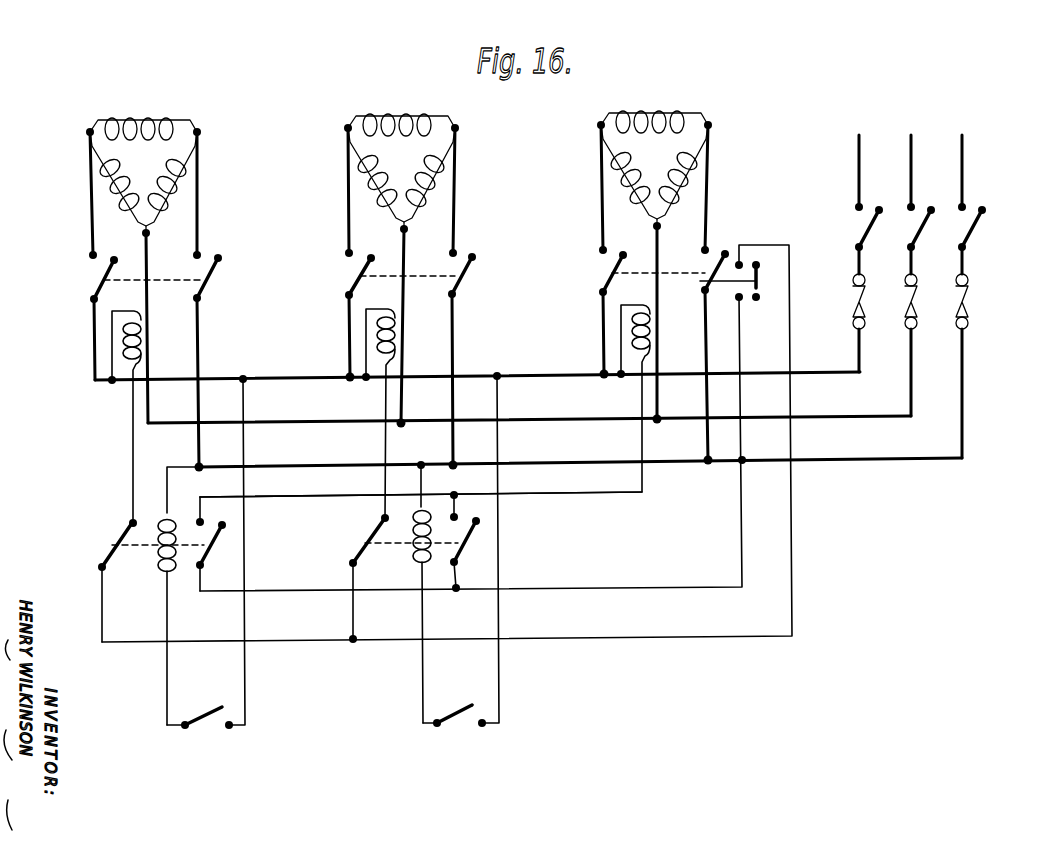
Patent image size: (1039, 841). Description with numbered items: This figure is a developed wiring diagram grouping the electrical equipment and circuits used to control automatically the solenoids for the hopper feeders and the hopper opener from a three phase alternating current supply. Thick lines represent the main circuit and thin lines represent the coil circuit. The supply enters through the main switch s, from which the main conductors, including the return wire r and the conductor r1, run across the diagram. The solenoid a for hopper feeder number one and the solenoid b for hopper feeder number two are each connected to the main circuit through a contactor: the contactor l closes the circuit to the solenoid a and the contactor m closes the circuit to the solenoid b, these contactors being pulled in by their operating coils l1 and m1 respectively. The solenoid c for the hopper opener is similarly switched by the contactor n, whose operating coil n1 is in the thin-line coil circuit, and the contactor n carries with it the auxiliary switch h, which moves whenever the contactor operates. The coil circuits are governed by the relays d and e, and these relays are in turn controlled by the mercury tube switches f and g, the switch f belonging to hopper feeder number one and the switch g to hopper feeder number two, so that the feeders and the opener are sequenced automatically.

The solenoid a is at (145, 258).
The solenoid b is at (403, 256).
The solenoid for the hopper opener c is at (659, 252).
The contactor l is at (100, 276).
The operating coil l1 is at (120, 344).
The contactor m is at (354, 271).
The operating coil m1 is at (371, 339).
The contactor n is at (608, 274).
The operating coil n1 is at (628, 344).
The auxiliary switch h is at (764, 293).
The main switch s is at (984, 229).
The return wire r is at (920, 372).
The supply conductor r1 is at (601, 411).
The relay d is at (161, 596).
The relay e is at (414, 594).
The mercury tube switch f is at (222, 689).
The mercury tube switch g is at (479, 689).